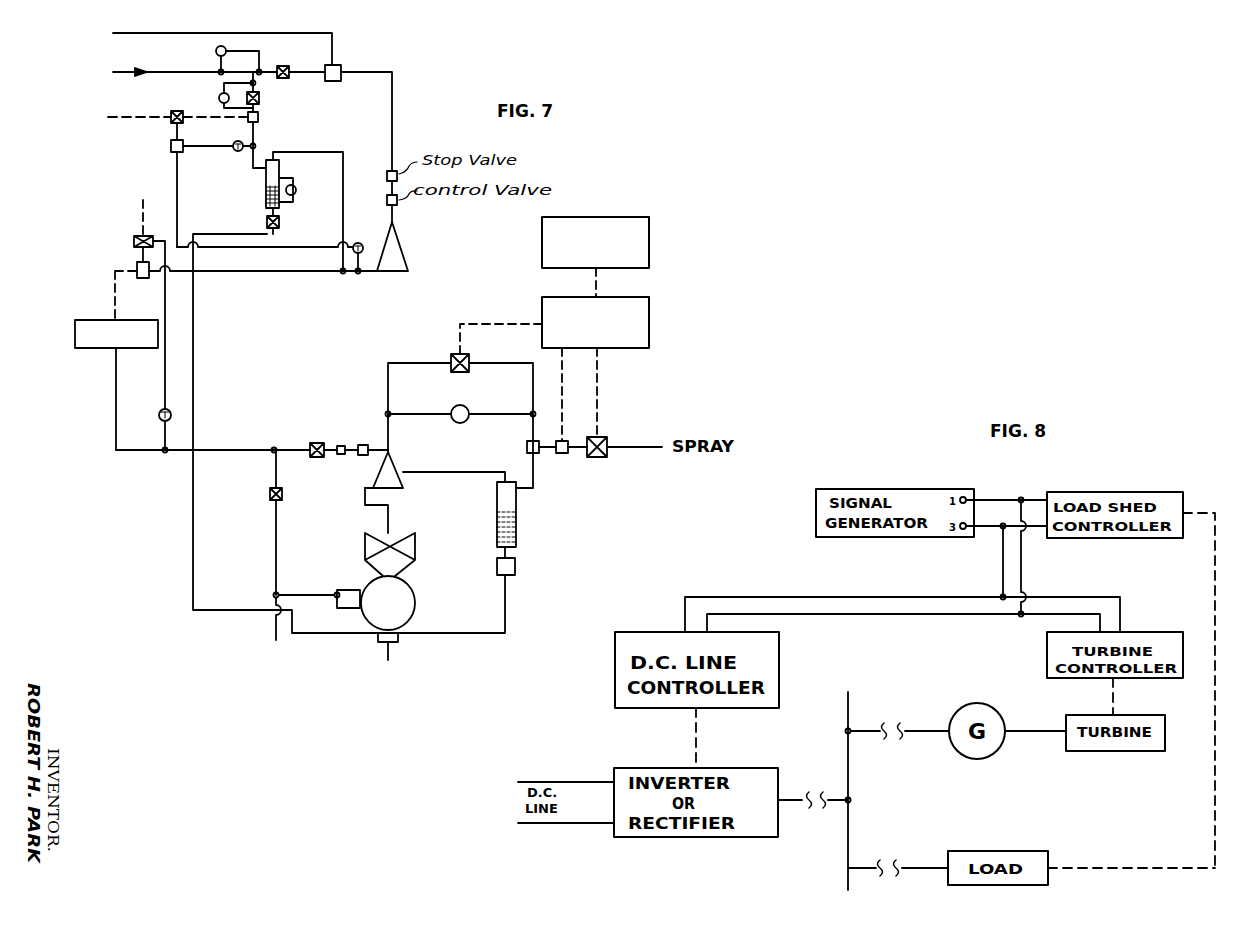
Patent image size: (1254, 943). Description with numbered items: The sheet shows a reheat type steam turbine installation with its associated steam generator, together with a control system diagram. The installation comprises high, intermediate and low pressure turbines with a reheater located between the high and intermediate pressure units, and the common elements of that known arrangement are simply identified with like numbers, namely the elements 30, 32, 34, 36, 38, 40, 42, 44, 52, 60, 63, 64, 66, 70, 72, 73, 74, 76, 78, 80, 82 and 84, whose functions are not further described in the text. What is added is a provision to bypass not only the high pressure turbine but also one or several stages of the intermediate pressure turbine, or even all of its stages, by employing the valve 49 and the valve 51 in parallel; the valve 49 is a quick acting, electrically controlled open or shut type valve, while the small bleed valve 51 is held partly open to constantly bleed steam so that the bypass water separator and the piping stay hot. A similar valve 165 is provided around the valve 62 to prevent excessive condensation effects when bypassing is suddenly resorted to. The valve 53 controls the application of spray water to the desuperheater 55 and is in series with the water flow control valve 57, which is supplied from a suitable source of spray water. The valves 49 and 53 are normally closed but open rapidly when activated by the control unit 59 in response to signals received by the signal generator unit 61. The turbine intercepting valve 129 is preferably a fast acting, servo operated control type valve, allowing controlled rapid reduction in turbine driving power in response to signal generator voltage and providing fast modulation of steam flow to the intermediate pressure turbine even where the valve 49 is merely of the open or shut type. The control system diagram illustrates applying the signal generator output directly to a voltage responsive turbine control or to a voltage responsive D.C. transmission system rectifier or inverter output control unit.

The high pressure turbine 30 is at (400, 246).
The crossover steam line 32 is at (299, 273).
The reheater 34 is at (75, 346).
The reheated steam line 36 is at (235, 448).
The low pressure turbine 38 is at (376, 473).
The exhaust duct 40 is at (395, 518).
The exhaust valve 42 is at (417, 549).
The condenser 44 is at (416, 607).
The quick acting open or shut type valve 49 is at (452, 357).
The small bleed valve 51 is at (452, 408).
The main steam valve 52 is at (341, 65).
The spray water valve 53 is at (604, 439).
The desuperheater 55 is at (536, 454).
The water flow control valve 57 is at (562, 454).
The control unit 59 is at (649, 301).
The steam supply circuit 60 is at (257, 140).
The signal generator unit 61 is at (628, 220).
The valve 62 is at (260, 98).
The pressure sensor 63 is at (216, 51).
The regulator 64 is at (259, 119).
The heat exchanger 66 is at (280, 168).
The auxiliary valve 70 is at (170, 124).
The temperature gauge 72 is at (234, 150).
The temperature gauge 73 is at (360, 243).
The mixing unit 74 is at (137, 270).
The auxiliary steam valve 76 is at (134, 239).
The temperature sensor 78 is at (159, 414).
The throttle valve 80 is at (290, 61).
The bypass line valve 82 is at (271, 548).
The intercept valve 84 is at (308, 445).
The turbine intercepting valve 129 is at (362, 443).
The bleed valve 165 is at (218, 99).